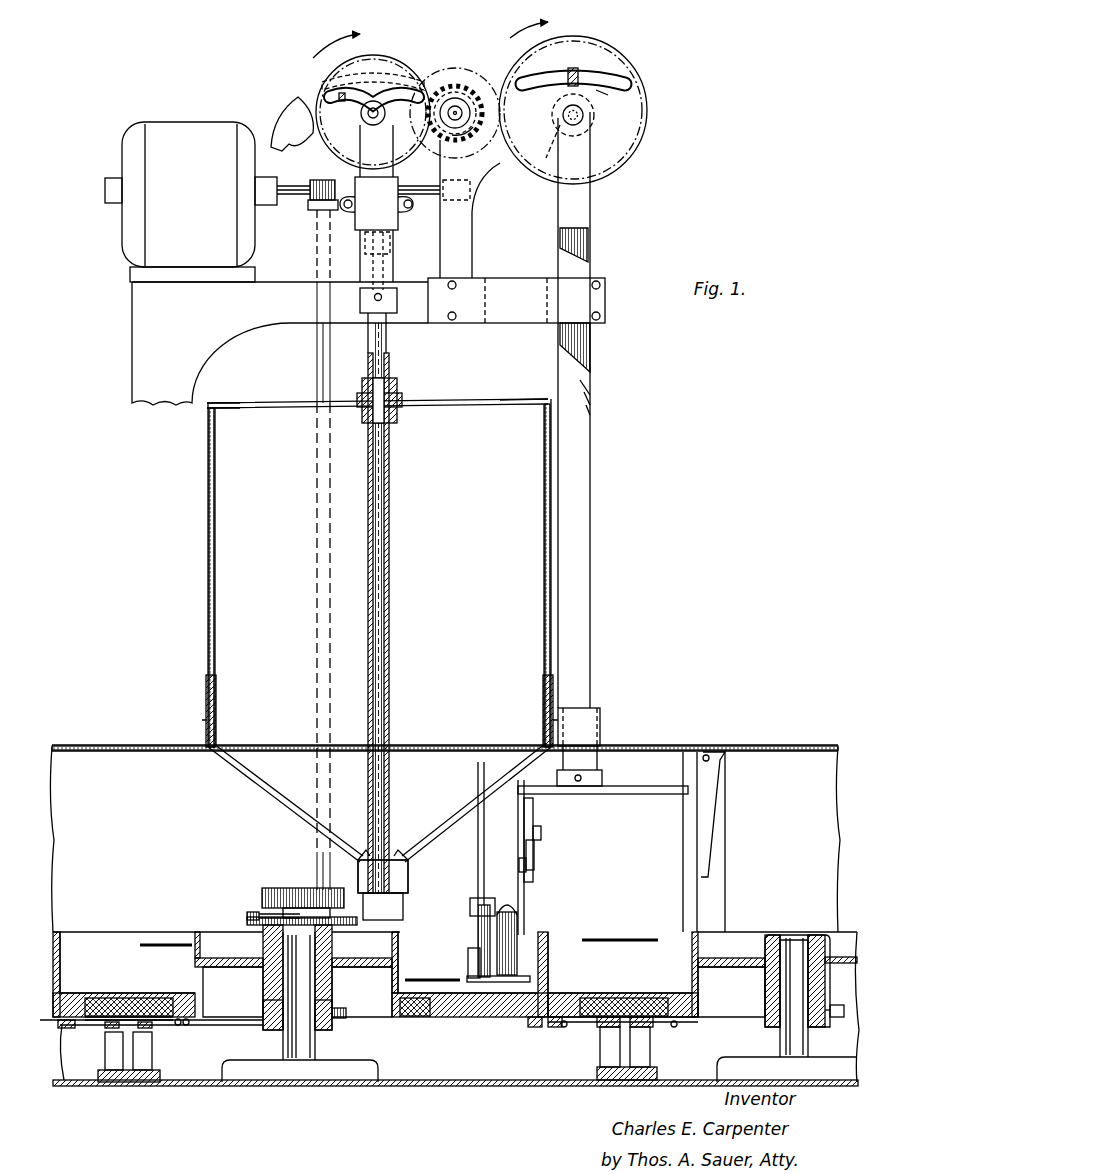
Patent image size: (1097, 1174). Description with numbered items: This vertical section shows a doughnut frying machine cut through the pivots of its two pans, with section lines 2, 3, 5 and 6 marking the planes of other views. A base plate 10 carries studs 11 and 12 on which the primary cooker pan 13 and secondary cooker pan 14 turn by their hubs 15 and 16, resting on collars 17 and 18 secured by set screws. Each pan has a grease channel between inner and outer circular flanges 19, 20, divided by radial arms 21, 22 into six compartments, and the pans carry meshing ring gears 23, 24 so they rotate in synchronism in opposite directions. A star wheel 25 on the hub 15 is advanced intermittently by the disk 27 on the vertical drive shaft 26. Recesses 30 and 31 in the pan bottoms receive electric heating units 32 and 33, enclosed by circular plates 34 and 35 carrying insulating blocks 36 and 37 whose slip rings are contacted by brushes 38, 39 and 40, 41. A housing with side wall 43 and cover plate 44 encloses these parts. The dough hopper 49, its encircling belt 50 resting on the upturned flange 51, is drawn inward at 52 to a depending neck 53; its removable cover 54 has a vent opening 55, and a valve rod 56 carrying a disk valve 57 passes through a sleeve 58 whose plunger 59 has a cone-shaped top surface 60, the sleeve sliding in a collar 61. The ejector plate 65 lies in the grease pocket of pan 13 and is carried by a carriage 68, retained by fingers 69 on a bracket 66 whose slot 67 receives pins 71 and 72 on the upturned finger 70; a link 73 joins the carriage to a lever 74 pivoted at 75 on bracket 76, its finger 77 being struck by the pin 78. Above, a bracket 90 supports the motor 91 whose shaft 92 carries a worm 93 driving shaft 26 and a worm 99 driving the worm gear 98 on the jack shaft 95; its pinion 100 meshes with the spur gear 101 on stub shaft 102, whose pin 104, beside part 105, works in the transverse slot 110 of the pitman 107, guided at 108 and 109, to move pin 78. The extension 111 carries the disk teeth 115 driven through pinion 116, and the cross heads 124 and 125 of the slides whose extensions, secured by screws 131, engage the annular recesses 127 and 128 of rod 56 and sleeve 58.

The section line 2 is at (675, 125).
The section line 3 is at (85, 912).
The section line 5 is at (603, 637).
The section line 6 is at (362, 13).
The base plate 10 is at (438, 1087).
The stud 11 is at (298, 1060).
The stud 12 is at (795, 1035).
The primary cooker pan 13 is at (105, 930).
The secondary cooker pan 14 is at (740, 930).
The hub 15 is at (264, 980).
The hub 16 is at (770, 977).
The collar 17 is at (264, 1022).
The collar 18 is at (828, 1030).
The inner circular flange 19 is at (203, 930).
The outer circular flange 20 is at (60, 940).
The radial arms 21 is at (150, 947).
The radial arms 22 is at (640, 938).
The ring gear 23 is at (530, 1025).
The ring gear 24 is at (556, 1027).
The star wheel 25 is at (247, 914).
The vertical drive shaft 26 is at (316, 367).
The disk 27 is at (289, 888).
The circular recess 30 is at (70, 1025).
The circular recess 31 is at (670, 1003).
The electric heating unit 32 is at (162, 1020).
The electric heating unit 33 is at (660, 1010).
The circular plate 34 is at (92, 1022).
The circular plate 35 is at (650, 1020).
The insulating block 36 is at (120, 998).
The insulating block 37 is at (620, 998).
The contact brush 38 is at (116, 1063).
The contact brush 39 is at (144, 1063).
The contact brush 40 is at (610, 1060).
The contact brush 41 is at (640, 1060).
The side wall 43 is at (770, 817).
The cover plate 44 is at (650, 745).
The dough hopper 49 is at (204, 565).
The encircling belt 50 is at (206, 686).
The upturned flange 51 is at (206, 722).
The inwardly drawn lower portion 52 is at (270, 785).
The neck 53 is at (409, 887).
The removable cover plate 54 is at (272, 410).
The vent opening 55 is at (470, 397).
The valve rod 56 is at (372, 548).
The disk valve 57 is at (405, 903).
The sleeve 58 is at (392, 572).
The plunger 59 is at (397, 852).
The top surface 60 is at (364, 850).
The collar 61 is at (397, 412).
The sheet metal plate 65 is at (412, 978).
The bracket 66 is at (490, 840).
The vertical slot 67 is at (480, 925).
The carriage 68 is at (540, 932).
The fingers 69 is at (488, 898).
The upturned finger 70 is at (470, 968).
The upper pin 71 is at (520, 958).
The lower pin 72 is at (522, 970).
The link 73 is at (527, 882).
The lever 74 is at (535, 855).
The pivot 75 is at (542, 830).
The bracket 76 is at (524, 815).
The finger 77 is at (520, 800).
The pin 78 is at (602, 788).
The bracket 90 is at (135, 382).
The electric driving motor 91 is at (160, 232).
The motor shaft 92 is at (298, 196).
The worm 93 is at (320, 180).
The jack shaft 95 is at (458, 108).
The worm gear 98 is at (450, 70).
The worm 99 is at (470, 200).
The pinion 100 is at (463, 104).
The spur gear 101 is at (619, 185).
The stub shaft 102 is at (586, 124).
The pin 104 is at (602, 94).
The collar 105 is at (554, 126).
The pitman 107 is at (580, 386).
The bracket extension 108 is at (582, 303).
The slide mounting 109 is at (578, 720).
The transverse slot 110 is at (590, 80).
The bracket extension 111 is at (293, 118).
The teeth 115 is at (340, 94).
The pinion 116 is at (470, 135).
The cross head 124 is at (346, 93).
The cross head 125 is at (338, 78).
The annular recess 127 is at (376, 207).
The annular recess 128 is at (362, 312).
The screws 131 is at (384, 297).